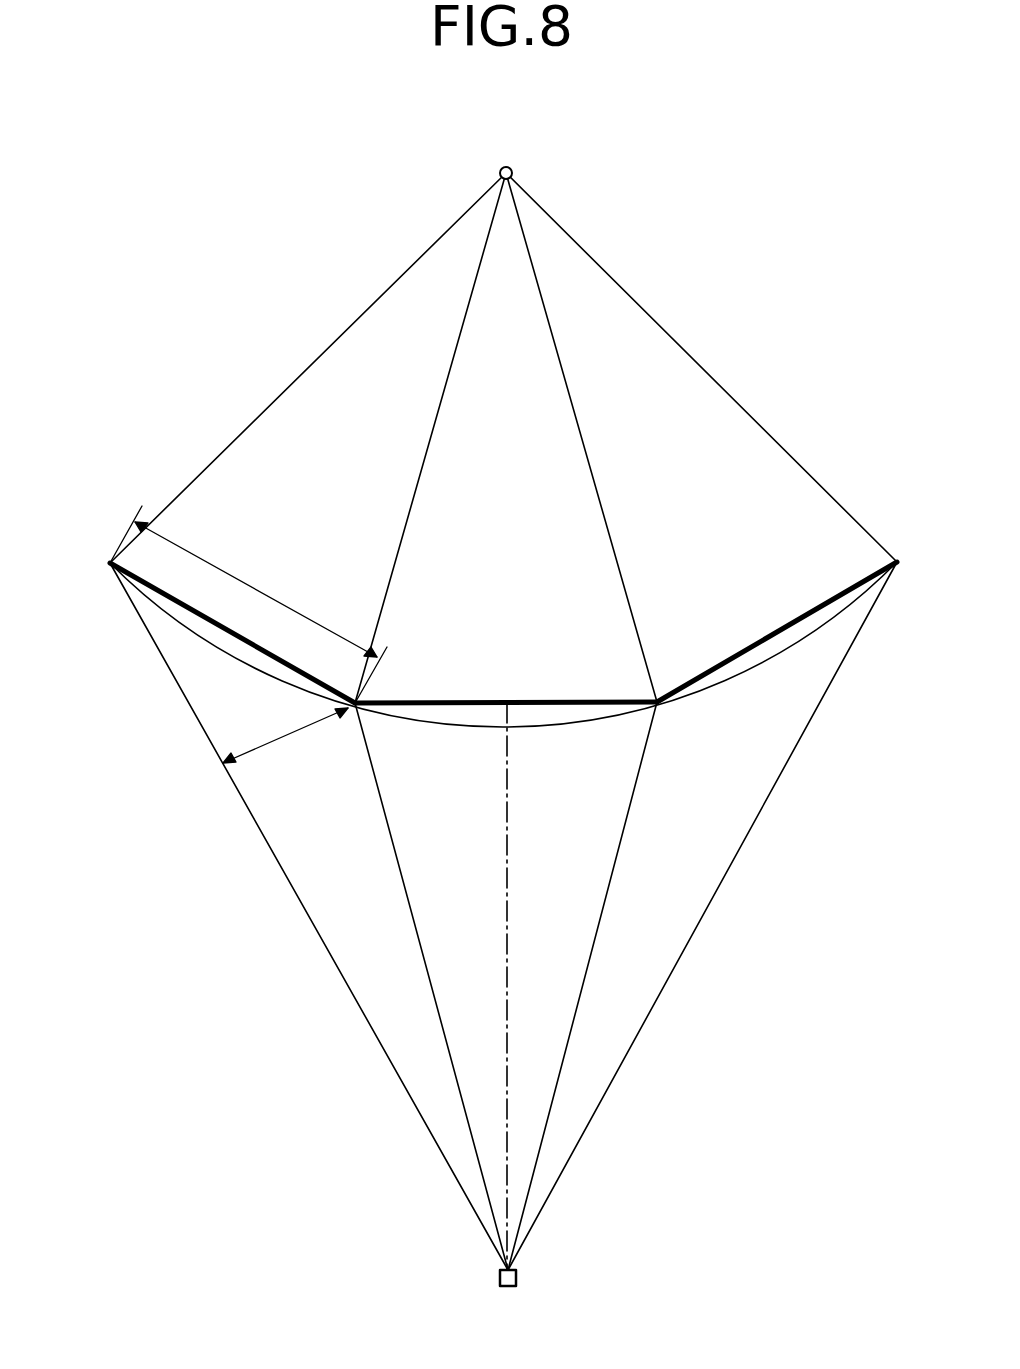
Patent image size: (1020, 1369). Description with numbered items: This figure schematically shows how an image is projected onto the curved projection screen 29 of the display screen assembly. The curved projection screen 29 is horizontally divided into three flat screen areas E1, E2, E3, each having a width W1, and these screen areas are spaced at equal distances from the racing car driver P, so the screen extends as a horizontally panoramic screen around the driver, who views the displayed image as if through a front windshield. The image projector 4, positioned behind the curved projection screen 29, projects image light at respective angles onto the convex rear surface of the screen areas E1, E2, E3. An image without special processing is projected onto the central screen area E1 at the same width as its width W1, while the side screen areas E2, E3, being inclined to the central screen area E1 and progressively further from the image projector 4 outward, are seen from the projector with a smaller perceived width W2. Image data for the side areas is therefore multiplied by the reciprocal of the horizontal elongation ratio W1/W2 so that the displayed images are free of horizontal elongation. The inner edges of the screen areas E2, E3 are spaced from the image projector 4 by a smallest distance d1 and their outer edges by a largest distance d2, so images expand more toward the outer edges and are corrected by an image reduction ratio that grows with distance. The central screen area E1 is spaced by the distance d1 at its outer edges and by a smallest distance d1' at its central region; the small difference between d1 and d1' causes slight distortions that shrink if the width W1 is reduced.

The curved projection screen 29 is at (852, 575).
The image projector 4 is at (525, 1277).
The racing car driver P is at (508, 166).
The central screen area E1 is at (522, 703).
The screen area E2 is at (213, 627).
The screen area E3 is at (753, 640).
The width W1 is at (248, 604).
The width W2 is at (285, 735).
The smallest distance d1 is at (506, 986).
The smallest distance d1' is at (532, 986).
The largest distance d2 is at (503, 916).